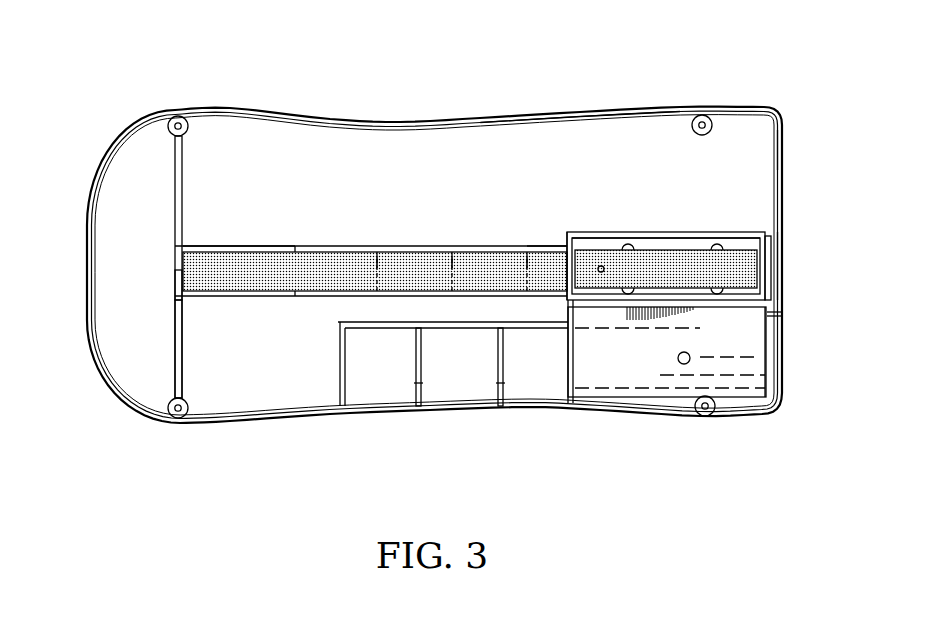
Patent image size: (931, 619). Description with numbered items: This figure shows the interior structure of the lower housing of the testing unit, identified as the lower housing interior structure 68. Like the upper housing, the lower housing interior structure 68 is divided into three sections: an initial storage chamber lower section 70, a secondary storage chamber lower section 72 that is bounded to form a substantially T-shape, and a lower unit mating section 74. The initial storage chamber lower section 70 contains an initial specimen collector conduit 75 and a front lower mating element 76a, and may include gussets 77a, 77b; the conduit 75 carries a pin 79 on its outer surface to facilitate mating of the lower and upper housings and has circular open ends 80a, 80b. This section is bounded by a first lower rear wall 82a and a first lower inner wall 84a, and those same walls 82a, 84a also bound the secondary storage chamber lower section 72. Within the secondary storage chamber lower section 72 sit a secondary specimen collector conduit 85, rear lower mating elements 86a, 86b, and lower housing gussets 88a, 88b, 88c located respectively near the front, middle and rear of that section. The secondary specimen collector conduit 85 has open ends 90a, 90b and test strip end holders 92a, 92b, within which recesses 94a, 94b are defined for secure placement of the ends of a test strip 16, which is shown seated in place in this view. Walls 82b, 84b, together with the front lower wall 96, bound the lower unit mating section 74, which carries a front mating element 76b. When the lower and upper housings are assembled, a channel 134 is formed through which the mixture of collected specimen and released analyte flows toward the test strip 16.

The test strip 16 is at (280, 250).
The lower housing interior structure 68 is at (738, 100).
The initial storage chamber lower section 70 is at (250, 392).
The secondary storage chamber lower section 72 is at (743, 246).
The lower unit mating section 74 is at (572, 115).
The initial specimen collector conduit 75 is at (608, 377).
The front lower mating element 76a is at (748, 418).
The front mating element 76b is at (713, 125).
The gusset 77a is at (500, 392).
The gusset 77b is at (419, 392).
The pin 79 is at (684, 364).
The circular open end 80a is at (768, 362).
The circular open end 80b is at (562, 383).
The first lower rear wall 82a is at (183, 376).
The wall 82b is at (184, 153).
The first lower inner wall 84a is at (388, 297).
The wall 84b is at (538, 247).
The secondary specimen collector conduit 85 is at (784, 279).
The rear lower mating element 86a is at (170, 410).
The rear lower mating element 86b is at (167, 126).
The lower housing gusset 88a is at (524, 262).
The lower housing gusset 88b is at (450, 262).
The lower housing gusset 88c is at (375, 262).
The open end 90a is at (783, 247).
The open end 90b is at (572, 246).
The test strip end holder 92a is at (770, 330).
The test strip end holder 92b is at (174, 283).
The recess 94a is at (707, 237).
The recess 94b is at (229, 244).
The front lower wall 96 is at (760, 143).
The channel 134 is at (602, 262).